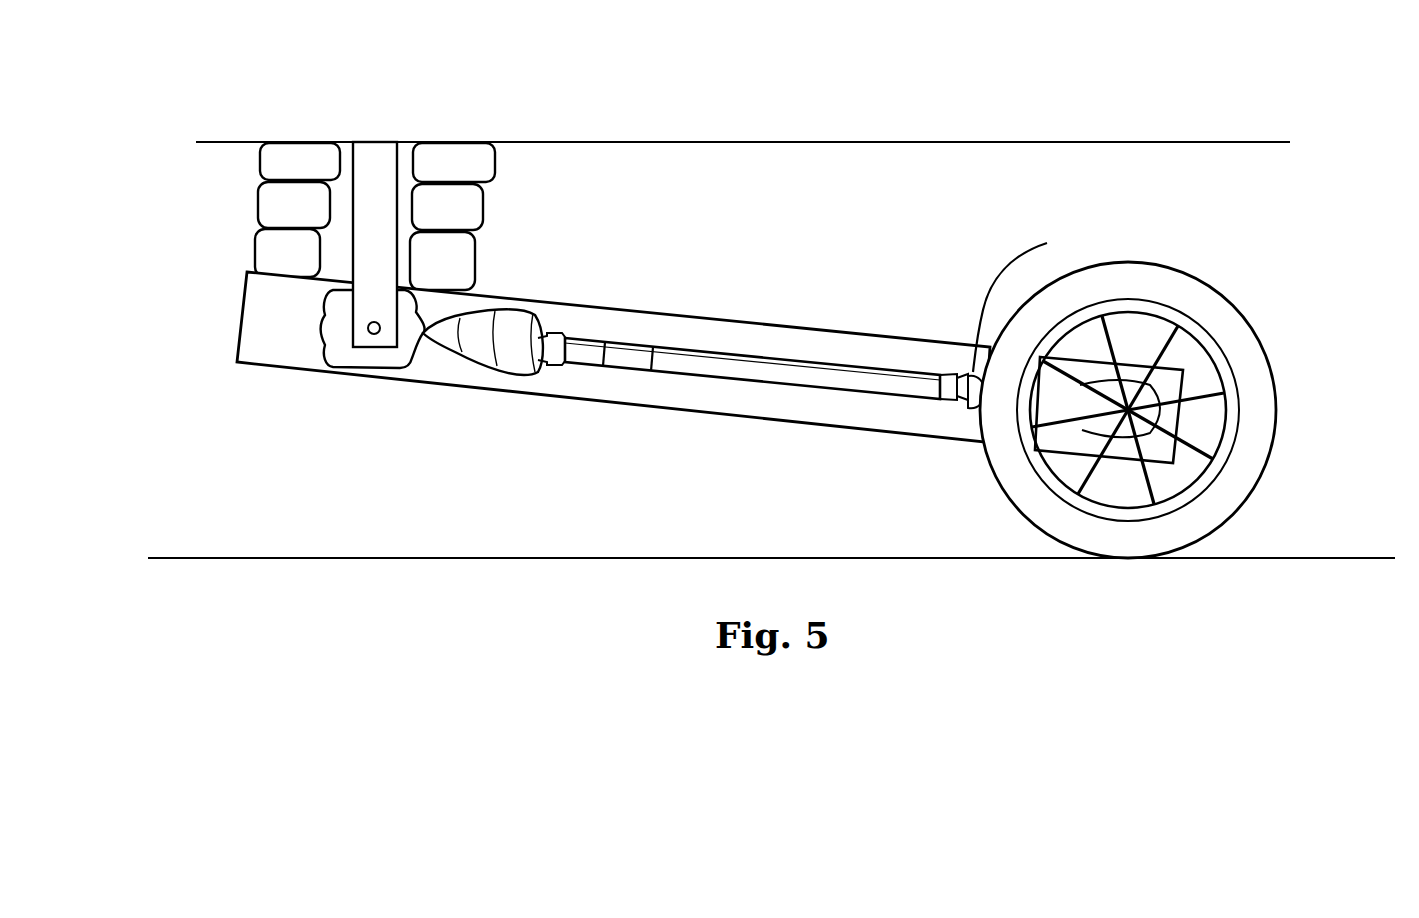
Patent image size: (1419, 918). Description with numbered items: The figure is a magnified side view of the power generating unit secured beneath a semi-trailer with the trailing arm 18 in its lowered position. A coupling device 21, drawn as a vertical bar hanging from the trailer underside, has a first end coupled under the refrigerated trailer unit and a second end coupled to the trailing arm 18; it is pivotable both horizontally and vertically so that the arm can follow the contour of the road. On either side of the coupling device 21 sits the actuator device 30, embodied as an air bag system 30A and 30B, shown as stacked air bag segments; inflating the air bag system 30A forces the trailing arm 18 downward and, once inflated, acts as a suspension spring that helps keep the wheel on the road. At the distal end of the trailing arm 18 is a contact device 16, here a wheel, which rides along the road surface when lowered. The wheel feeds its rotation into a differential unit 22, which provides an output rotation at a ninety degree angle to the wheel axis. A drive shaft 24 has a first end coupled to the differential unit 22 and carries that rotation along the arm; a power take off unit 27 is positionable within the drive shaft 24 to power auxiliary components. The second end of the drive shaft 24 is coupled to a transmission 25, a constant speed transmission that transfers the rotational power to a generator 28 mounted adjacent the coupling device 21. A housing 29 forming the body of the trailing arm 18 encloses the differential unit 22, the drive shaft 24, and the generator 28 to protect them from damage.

The contact device 16 is at (1275, 390).
The trailing arm 18 is at (613, 391).
The coupling device 21 is at (383, 147).
The differential unit 22 is at (1032, 294).
The drive shaft 24 is at (697, 360).
The transmission 25 is at (523, 317).
The power take off unit 27 is at (626, 370).
The generator 28 is at (332, 360).
The housing 29 is at (808, 421).
The actuator device 30 is at (363, 178).
The air bag system 30A is at (497, 175).
The air bag system 30B is at (288, 142).